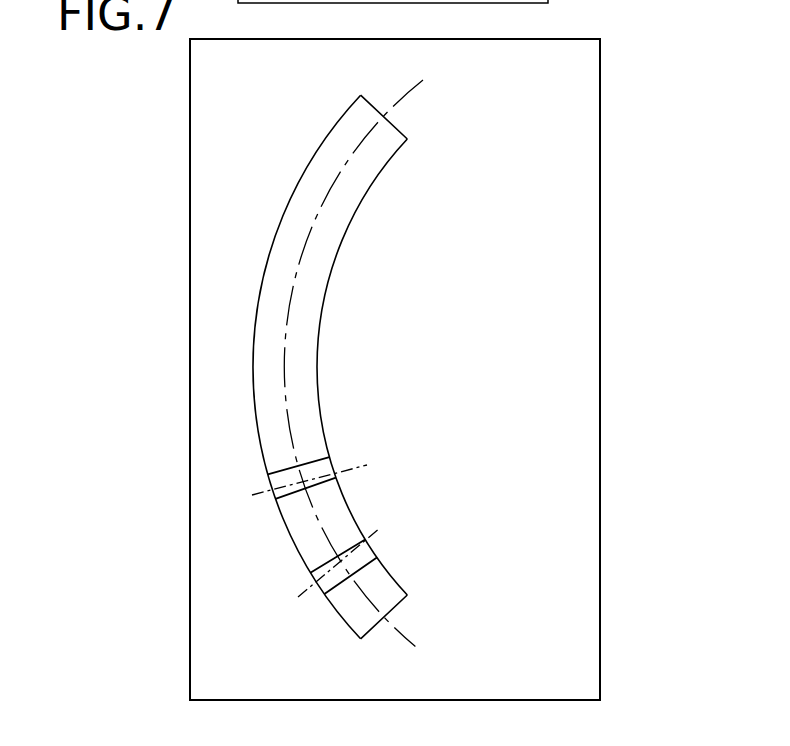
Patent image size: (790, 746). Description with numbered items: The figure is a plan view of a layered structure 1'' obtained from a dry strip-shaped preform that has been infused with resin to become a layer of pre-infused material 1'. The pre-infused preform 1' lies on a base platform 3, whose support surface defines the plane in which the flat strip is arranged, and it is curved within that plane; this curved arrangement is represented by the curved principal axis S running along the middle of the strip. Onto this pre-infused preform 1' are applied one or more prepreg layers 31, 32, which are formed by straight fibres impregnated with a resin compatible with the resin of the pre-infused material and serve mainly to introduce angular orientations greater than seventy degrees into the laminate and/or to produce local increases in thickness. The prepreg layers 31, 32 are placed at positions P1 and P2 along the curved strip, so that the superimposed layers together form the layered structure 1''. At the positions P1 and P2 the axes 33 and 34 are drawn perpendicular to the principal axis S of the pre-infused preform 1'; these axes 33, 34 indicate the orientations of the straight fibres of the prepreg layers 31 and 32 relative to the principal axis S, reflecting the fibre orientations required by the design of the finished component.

The layer of pre-infused material 1' is at (281, 367).
The layered structure 1'' is at (226, 367).
The principal axis S is at (358, 175).
The base platform 3 is at (552, 232).
The prepreg layer 31 is at (334, 468).
The prepreg layer 32 is at (367, 552).
The axis 33 is at (347, 467).
The axis 34 is at (373, 533).
The position P1 is at (261, 484).
The position P2 is at (304, 583).